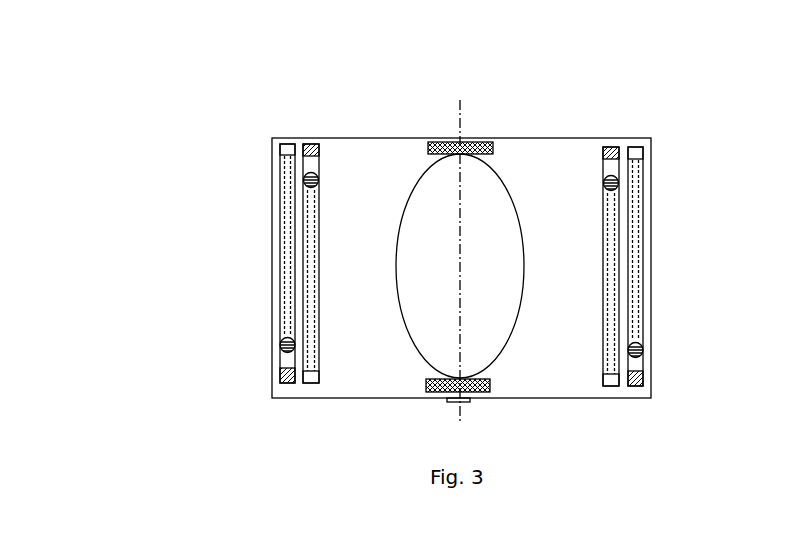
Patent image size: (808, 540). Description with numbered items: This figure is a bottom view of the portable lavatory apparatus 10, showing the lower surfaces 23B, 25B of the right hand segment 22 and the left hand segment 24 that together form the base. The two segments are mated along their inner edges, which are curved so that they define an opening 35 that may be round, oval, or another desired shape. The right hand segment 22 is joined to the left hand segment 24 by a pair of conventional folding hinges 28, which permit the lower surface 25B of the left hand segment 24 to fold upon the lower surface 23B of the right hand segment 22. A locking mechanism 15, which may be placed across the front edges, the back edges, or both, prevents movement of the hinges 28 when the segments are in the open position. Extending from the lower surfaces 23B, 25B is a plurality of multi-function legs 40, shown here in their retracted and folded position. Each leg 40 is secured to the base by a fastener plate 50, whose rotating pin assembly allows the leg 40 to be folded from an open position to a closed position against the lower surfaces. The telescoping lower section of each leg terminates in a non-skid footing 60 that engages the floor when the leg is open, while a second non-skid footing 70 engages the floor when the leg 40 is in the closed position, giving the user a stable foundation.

The portable lavatory apparatus 10 is at (207, 121).
The right hand segment 22 is at (668, 189).
The left hand segment 24 is at (262, 321).
The lower surface 25B is at (386, 168).
The lower surface 23B is at (548, 165).
The multi-function leg 40 is at (645, 262).
The non-skid footing 60 is at (320, 152).
The non-skid footing 70 is at (604, 183).
The fastener plate 50 is at (314, 377).
The opening 35 is at (485, 205).
The folding hinge 28 is at (437, 142).
The locking mechanism 15 is at (448, 400).